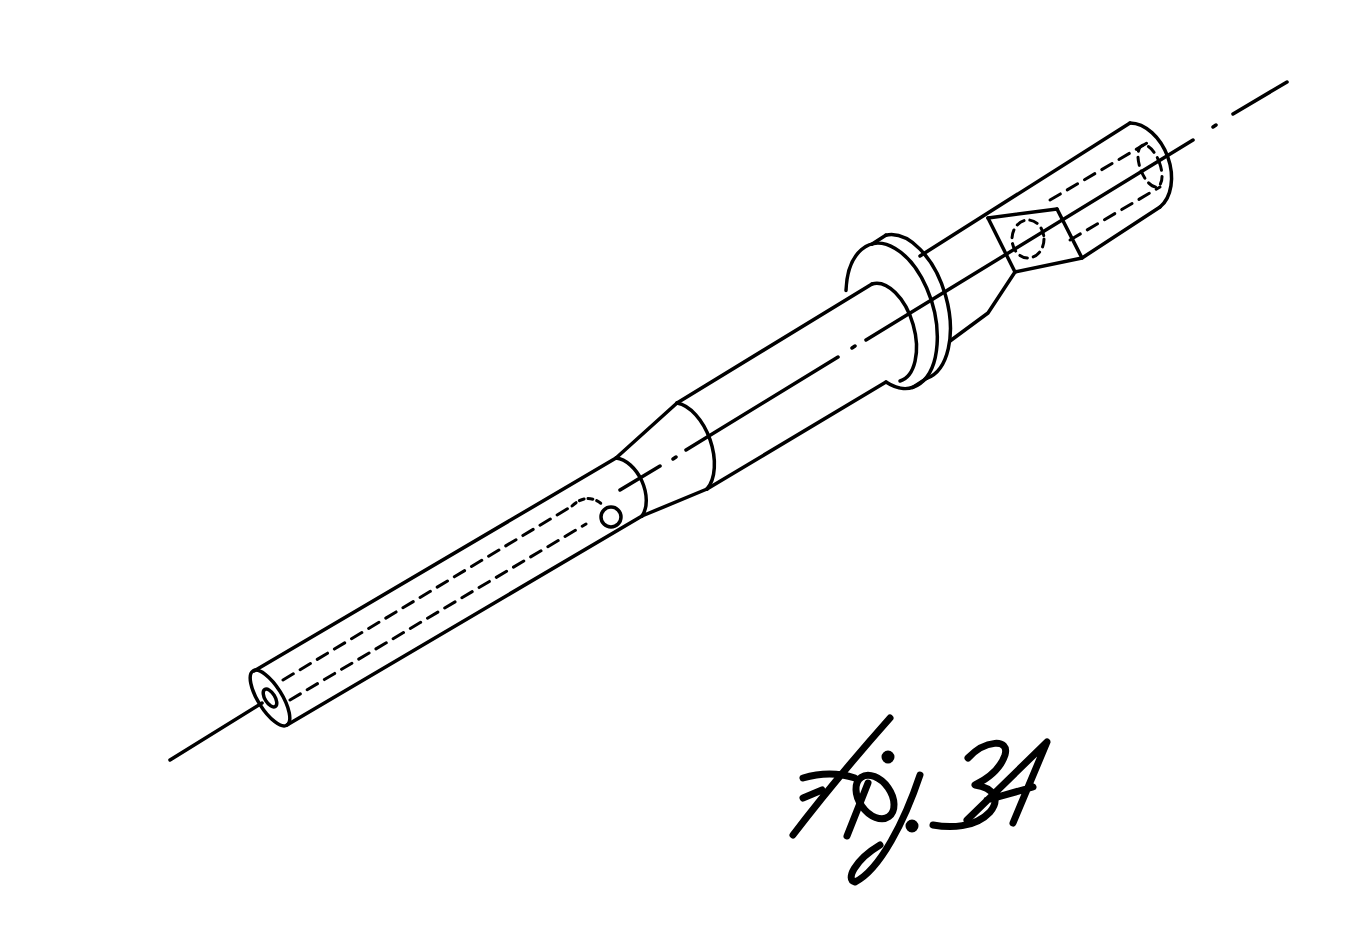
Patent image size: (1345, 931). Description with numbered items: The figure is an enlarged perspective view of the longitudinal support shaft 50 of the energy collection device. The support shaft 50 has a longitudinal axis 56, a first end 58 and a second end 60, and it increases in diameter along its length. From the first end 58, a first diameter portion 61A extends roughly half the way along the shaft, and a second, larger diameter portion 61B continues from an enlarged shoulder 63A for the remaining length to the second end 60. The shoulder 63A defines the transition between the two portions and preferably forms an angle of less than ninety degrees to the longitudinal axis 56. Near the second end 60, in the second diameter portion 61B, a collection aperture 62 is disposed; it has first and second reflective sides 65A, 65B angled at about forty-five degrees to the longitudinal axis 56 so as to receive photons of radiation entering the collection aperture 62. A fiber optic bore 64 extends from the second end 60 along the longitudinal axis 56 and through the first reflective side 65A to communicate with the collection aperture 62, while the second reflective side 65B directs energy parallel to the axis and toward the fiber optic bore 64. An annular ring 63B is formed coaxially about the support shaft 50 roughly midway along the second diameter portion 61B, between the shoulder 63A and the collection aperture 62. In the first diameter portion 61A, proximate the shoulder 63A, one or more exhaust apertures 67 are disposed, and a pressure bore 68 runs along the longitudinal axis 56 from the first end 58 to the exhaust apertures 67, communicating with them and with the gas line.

The support shaft 50 is at (707, 166).
The longitudinal axis 56 is at (1270, 88).
The first end 58 is at (283, 718).
The second end 60 is at (1187, 183).
The first diameter portion 61A is at (567, 397).
The second diameter portion 61B is at (1103, 72).
The collection aperture 62 is at (1003, 344).
The shoulder 63A is at (697, 470).
The annular ring 63B is at (925, 363).
The fiber optic bore 64 is at (1040, 207).
The first reflective side 65A is at (1048, 270).
The second reflective side 65B is at (980, 251).
The exhaust apertures 67 is at (622, 527).
The pressure bore 68 is at (422, 613).